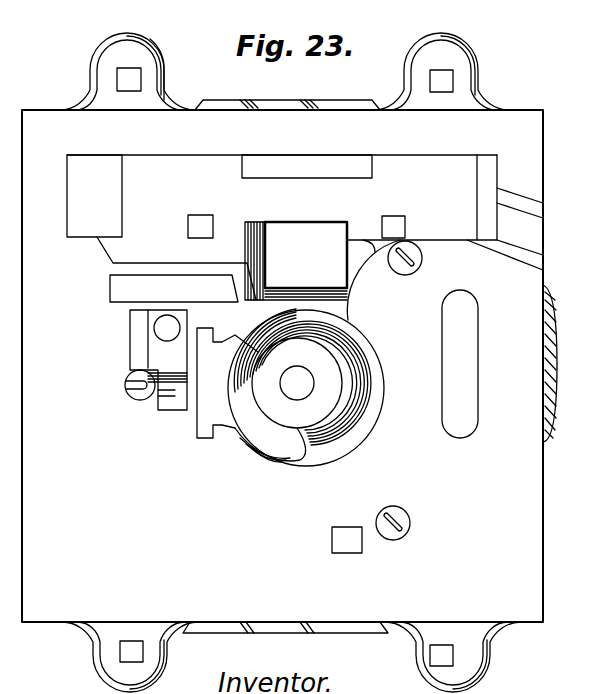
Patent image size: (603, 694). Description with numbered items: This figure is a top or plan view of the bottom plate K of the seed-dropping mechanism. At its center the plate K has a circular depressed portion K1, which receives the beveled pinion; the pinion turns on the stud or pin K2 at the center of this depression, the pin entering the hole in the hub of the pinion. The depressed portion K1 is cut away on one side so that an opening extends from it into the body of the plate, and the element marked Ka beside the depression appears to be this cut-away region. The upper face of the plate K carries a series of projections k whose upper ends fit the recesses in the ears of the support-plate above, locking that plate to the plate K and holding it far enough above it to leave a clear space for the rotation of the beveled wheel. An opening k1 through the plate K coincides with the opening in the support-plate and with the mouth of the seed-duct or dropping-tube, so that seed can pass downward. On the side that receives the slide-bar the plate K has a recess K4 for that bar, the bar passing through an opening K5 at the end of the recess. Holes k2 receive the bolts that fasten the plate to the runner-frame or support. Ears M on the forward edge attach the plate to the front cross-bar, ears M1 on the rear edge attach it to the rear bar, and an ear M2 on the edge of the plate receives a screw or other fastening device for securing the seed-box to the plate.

The rear ears M1 is at (284, 59).
The seed-box attaching ear M2 is at (561, 363).
The forward ears M is at (291, 657).
The bottom plate K is at (459, 396).
The central circular depressed portion K1 is at (392, 357).
The stud or pin K2 is at (297, 383).
The recess for the bar K4 is at (305, 228).
The opening for the bar K5 is at (94, 196).
The yoke Ka is at (194, 374).
The projections k is at (265, 391).
The opening k1 is at (322, 271).
The bolt-holes k2 is at (308, 381).